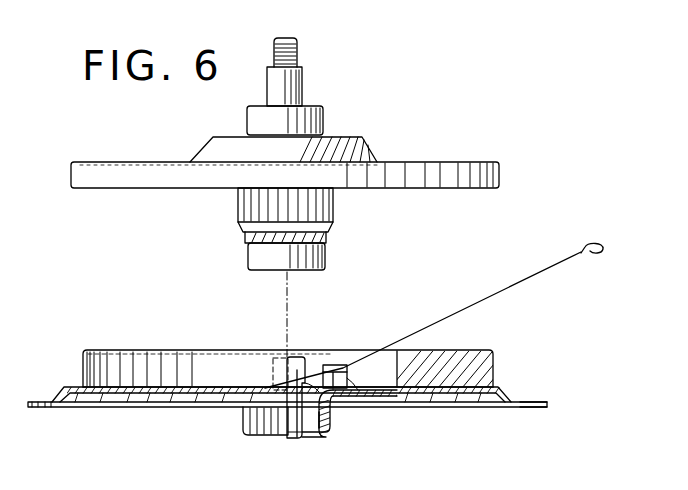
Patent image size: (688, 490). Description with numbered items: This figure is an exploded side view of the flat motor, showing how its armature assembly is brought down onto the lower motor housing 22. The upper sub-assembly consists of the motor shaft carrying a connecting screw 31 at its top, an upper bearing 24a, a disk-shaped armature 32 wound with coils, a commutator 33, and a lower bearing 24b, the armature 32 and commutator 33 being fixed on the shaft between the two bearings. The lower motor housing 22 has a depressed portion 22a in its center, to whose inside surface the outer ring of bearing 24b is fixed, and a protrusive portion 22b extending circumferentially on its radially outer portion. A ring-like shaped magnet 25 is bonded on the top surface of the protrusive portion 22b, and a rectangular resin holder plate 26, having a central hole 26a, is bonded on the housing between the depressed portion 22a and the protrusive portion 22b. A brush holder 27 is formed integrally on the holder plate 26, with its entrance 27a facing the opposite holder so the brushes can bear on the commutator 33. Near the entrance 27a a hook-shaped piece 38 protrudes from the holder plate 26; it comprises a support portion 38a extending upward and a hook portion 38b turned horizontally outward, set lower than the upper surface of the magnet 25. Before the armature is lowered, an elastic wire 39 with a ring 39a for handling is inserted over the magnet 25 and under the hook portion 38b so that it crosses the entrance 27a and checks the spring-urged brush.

The connecting screw 31 is at (283, 38).
The bearing 24a is at (323, 115).
The disk-shaped armature 32 is at (438, 162).
The commutator 33 is at (333, 205).
The bearing 24b is at (325, 252).
The ring-like shaped magnet 25 is at (495, 365).
The lower motor housing 22 is at (387, 407).
The depressed portion 22a is at (290, 445).
The protrusive portion 22b is at (478, 394).
The brush holder 27 is at (308, 339).
The entrance 27a is at (303, 439).
The resin holder plate 26 is at (363, 393).
The hole 26a is at (324, 425).
The hook-shaped piece 38 is at (337, 365).
The support portion 38a is at (330, 405).
The hook portion 38b is at (342, 370).
The wire 39 is at (505, 292).
The ring 39a is at (594, 242).